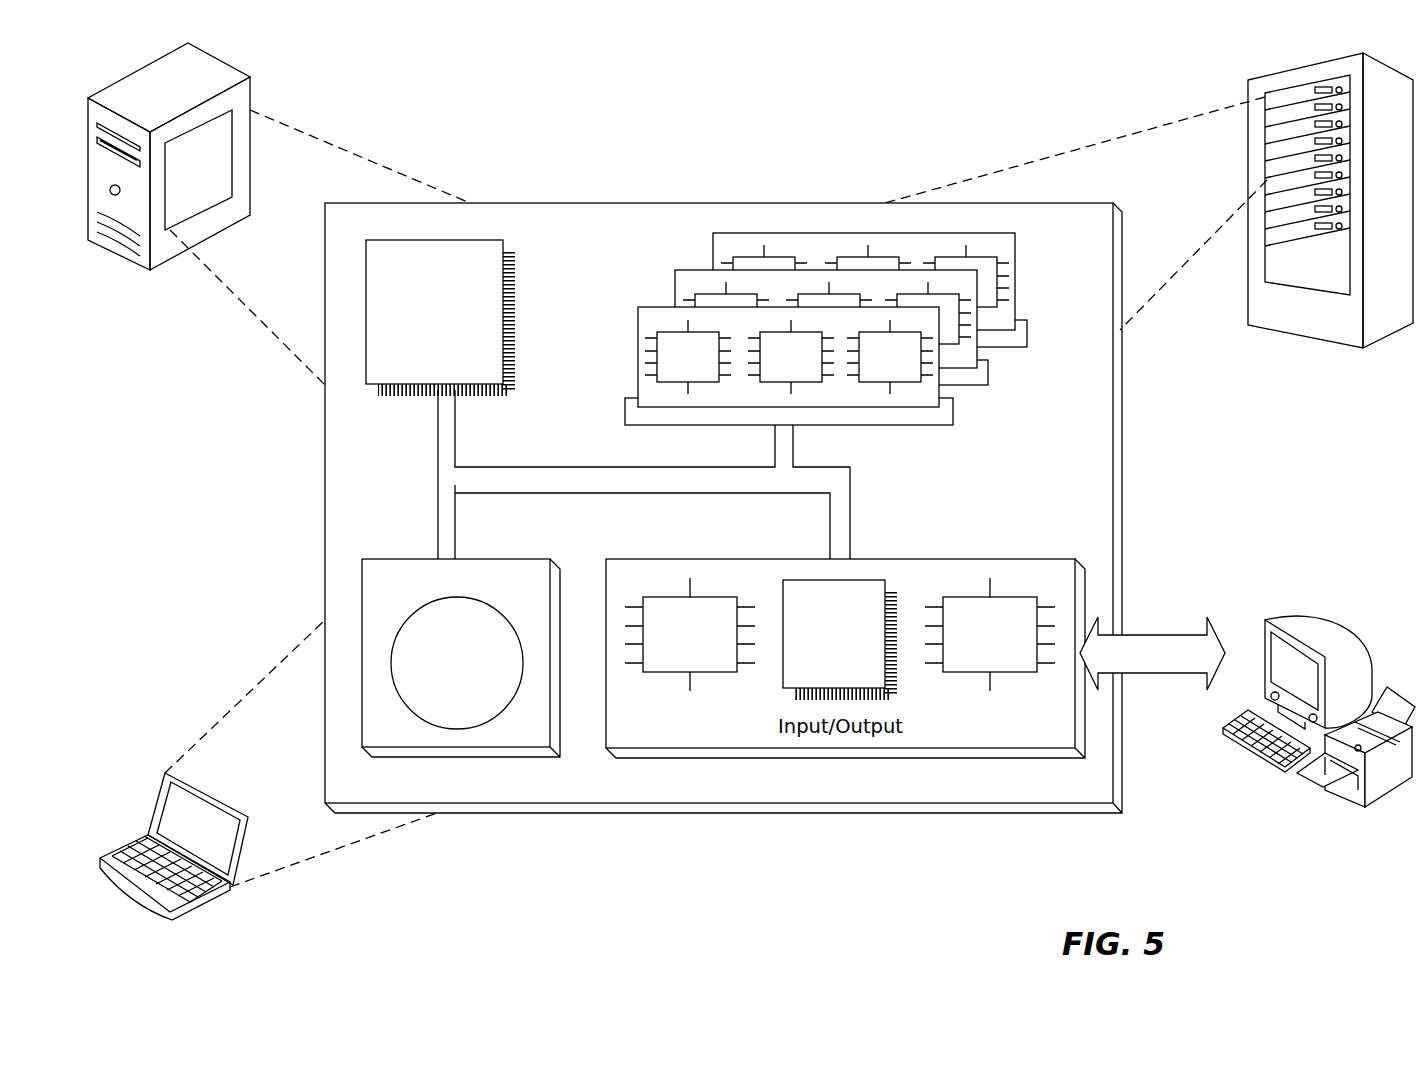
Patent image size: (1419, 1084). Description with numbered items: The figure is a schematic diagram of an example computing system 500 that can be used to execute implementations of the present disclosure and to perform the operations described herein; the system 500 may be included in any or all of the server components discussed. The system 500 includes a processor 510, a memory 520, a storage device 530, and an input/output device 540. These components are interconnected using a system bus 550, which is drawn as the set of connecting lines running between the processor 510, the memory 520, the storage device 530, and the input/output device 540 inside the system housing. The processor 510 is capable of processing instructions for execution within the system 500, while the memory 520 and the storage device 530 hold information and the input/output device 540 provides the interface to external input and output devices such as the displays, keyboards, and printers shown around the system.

The computing system 500 is at (535, 116).
The processor 510 is at (496, 375).
The memory 520 is at (1021, 386).
The storage device 530 is at (541, 736).
The input/output device 540 is at (1265, 621).
The system bus 550 is at (642, 493).